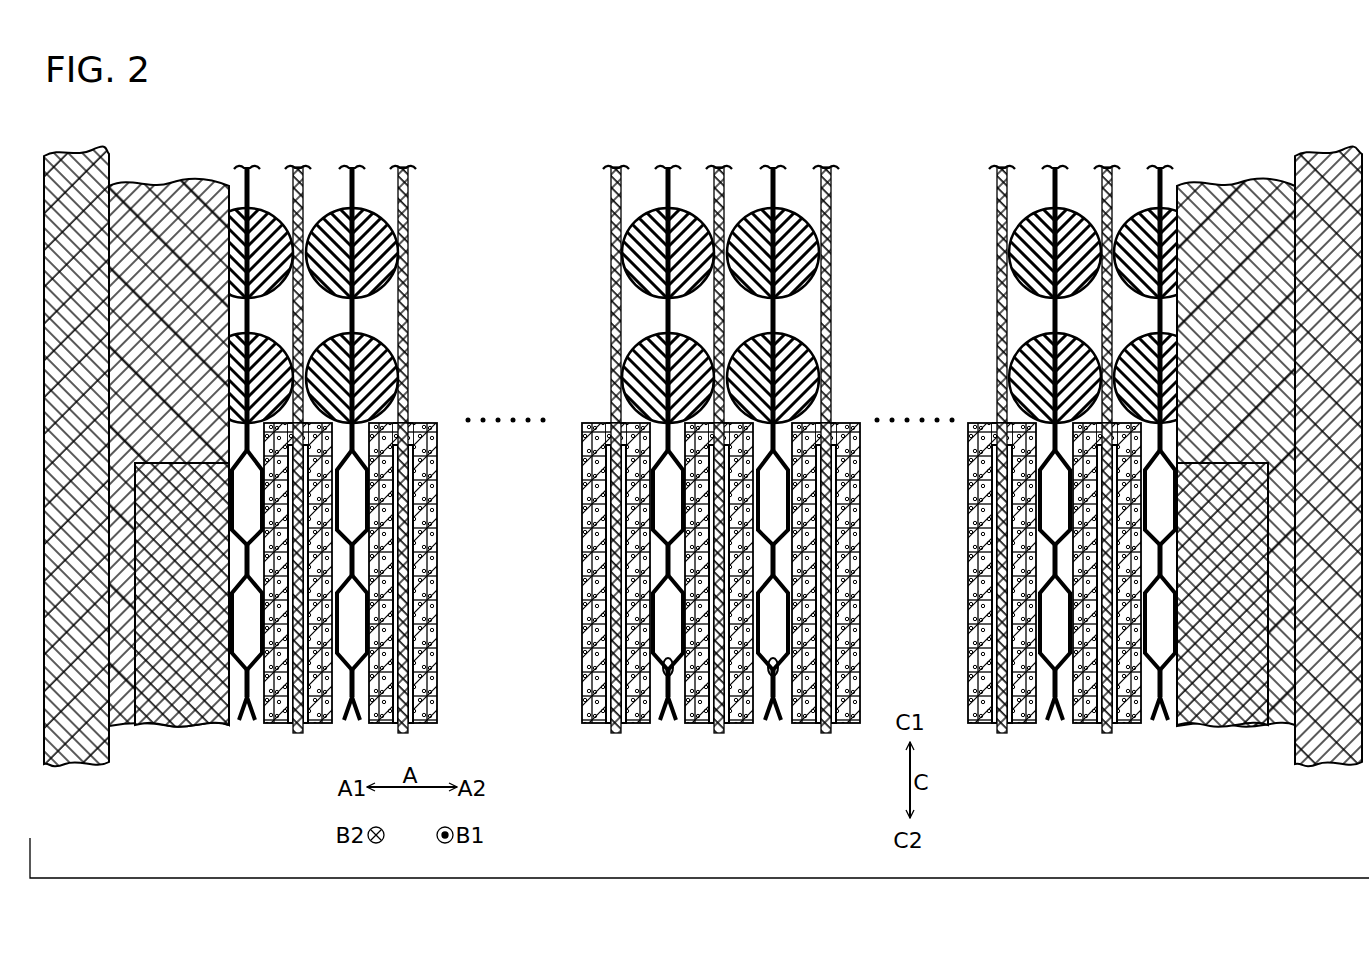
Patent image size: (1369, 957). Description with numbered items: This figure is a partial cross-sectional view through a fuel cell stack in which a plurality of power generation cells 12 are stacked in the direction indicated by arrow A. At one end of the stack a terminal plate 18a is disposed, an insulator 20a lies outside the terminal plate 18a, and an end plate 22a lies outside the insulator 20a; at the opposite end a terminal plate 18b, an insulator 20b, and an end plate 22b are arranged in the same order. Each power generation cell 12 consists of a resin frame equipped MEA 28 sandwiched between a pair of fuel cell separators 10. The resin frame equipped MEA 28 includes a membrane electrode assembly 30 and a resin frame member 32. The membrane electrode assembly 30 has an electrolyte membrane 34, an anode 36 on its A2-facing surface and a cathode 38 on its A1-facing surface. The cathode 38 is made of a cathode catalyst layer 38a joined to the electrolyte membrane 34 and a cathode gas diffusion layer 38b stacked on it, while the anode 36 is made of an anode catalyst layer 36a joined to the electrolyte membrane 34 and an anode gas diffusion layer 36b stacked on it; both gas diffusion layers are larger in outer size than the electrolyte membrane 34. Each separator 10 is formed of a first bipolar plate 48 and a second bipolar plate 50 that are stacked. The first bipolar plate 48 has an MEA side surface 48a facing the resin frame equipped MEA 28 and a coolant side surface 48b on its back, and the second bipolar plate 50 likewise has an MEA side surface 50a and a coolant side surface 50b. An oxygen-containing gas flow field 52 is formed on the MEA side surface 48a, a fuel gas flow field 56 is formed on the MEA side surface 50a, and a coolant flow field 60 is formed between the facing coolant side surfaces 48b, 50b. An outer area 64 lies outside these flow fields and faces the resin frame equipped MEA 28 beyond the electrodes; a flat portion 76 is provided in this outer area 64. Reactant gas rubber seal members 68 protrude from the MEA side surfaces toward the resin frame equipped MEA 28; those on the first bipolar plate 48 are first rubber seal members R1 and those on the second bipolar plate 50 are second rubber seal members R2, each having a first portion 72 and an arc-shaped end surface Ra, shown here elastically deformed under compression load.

The fuel cell separator 10 is at (703, 449).
The power generation cell 12 is at (660, 108).
The terminal plate 18a is at (184, 712).
The terminal plate 18b is at (1216, 714).
The insulator 20a is at (123, 707).
The insulator 20b is at (1280, 707).
The end plate 22a is at (60, 770).
The end plate 22b is at (1340, 770).
The resin frame equipped MEA 28 is at (702, 420).
The membrane electrode assembly 30 is at (702, 578).
The resin frame member 32 is at (405, 325).
The electrolyte membrane 34 is at (405, 645).
The anode 36 is at (722, 573).
The anode catalyst layer 36a is at (412, 701).
The anode gas diffusion layer 36b is at (427, 664).
The cathode 38 is at (683, 573).
The cathode catalyst layer 38a is at (397, 605).
The cathode gas diffusion layer 38b is at (383, 577).
The first bipolar plate 48 is at (1063, 672).
The MEA side surface 48a is at (779, 670).
The coolant side surface 48b is at (767, 672).
The second bipolar plate 50 is at (1047, 672).
The MEA side surface 50a is at (657, 672).
The coolant side surface 50b is at (677, 670).
The oxygen-containing gas flow field 52 is at (362, 557).
The fuel gas flow field 56 is at (352, 535).
The coolant flow field 60 is at (353, 487).
The outer area 64 is at (359, 190).
The reactant gas rubber seal member 68 is at (330, 266).
The first portion 72 is at (797, 268).
The flat portion 76 is at (348, 247).
The end surface Ra is at (300, 257).
The first rubber seal member R1 is at (1070, 232).
The second rubber seal member R2 is at (1140, 274).